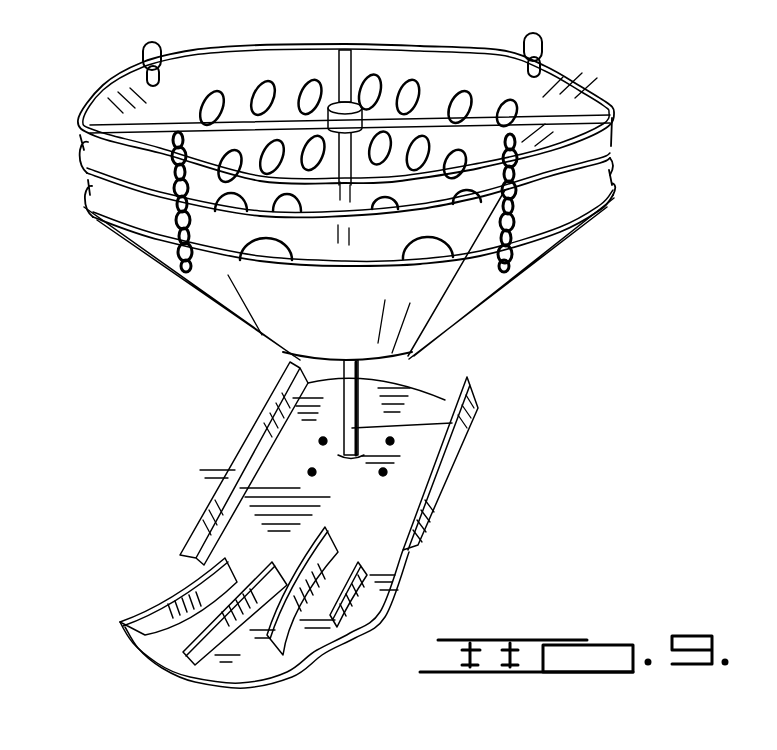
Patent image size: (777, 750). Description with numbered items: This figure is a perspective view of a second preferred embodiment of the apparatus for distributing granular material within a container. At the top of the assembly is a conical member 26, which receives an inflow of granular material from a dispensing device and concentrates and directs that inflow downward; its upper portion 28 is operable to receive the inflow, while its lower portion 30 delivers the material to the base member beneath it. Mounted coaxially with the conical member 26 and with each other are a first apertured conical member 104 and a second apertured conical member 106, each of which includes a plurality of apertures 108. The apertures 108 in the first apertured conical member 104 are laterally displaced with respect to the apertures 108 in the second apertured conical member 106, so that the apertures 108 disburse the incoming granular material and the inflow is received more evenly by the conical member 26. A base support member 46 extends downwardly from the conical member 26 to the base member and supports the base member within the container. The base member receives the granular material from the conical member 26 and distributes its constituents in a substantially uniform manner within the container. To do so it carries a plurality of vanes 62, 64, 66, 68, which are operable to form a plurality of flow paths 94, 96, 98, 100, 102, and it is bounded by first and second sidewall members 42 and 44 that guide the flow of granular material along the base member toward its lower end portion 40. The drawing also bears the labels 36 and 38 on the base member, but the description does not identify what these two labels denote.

The first apertured conical member 104 is at (614, 110).
The second apertured conical member 106 is at (612, 160).
The upper portion 28 is at (78, 206).
The conical member 26 is at (207, 306).
The lower portion 30 is at (290, 358).
The base support member 46 is at (453, 428).
The apertures 108 is at (455, 93).
The base plate 36 is at (360, 500).
The raised platform 38 is at (437, 385).
The first sidewall member 42 is at (247, 455).
The second sidewall member 44 is at (435, 533).
The flow path 102 is at (385, 605).
The lower end portion 40 is at (227, 625).
The vane 62 is at (152, 611).
The vane 64 is at (193, 641).
The vane 66 is at (275, 628).
The vane 68 is at (351, 636).
The flow path 94 is at (155, 598).
The flow path 96 is at (168, 645).
The flow path 98 is at (236, 655).
The flow path 100 is at (317, 633).